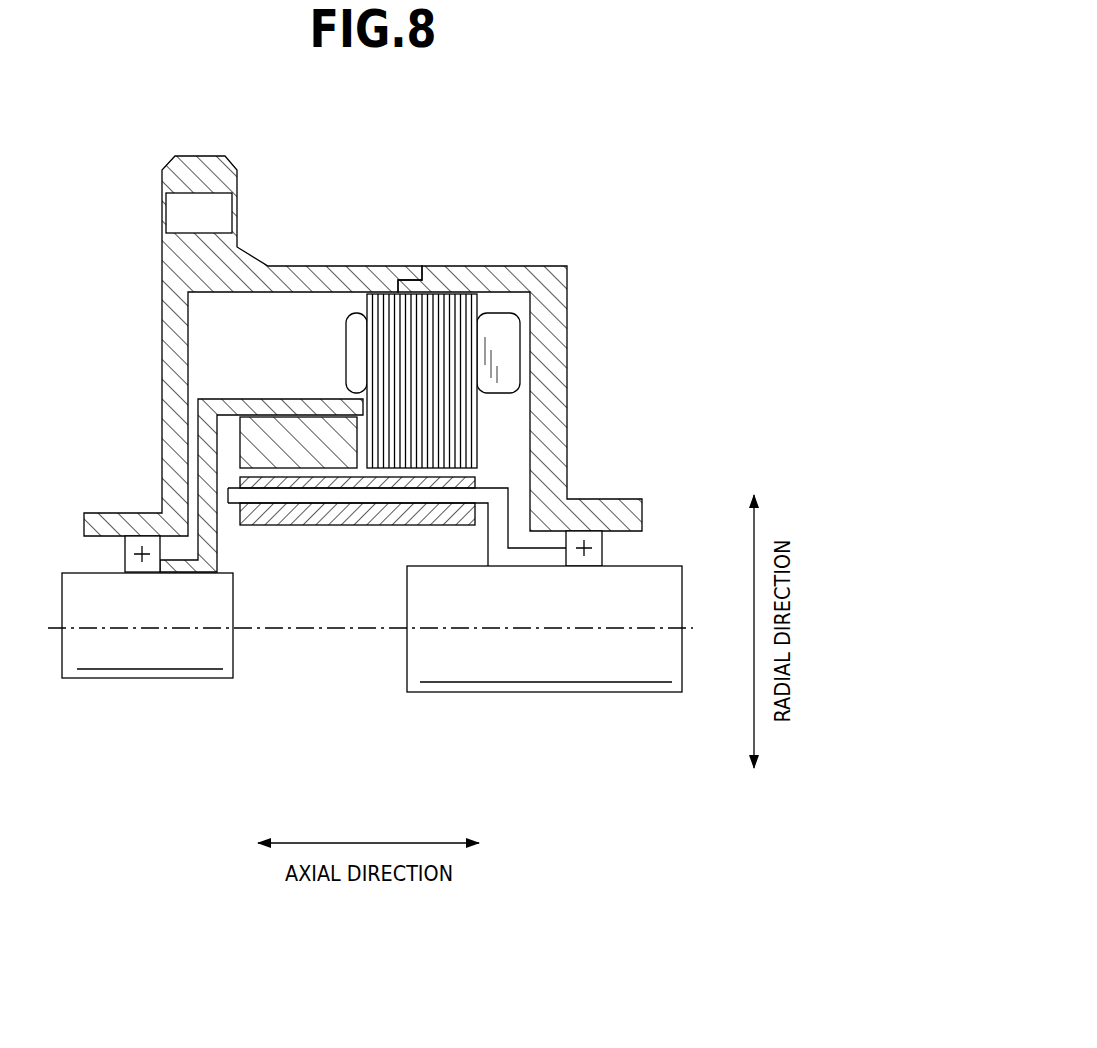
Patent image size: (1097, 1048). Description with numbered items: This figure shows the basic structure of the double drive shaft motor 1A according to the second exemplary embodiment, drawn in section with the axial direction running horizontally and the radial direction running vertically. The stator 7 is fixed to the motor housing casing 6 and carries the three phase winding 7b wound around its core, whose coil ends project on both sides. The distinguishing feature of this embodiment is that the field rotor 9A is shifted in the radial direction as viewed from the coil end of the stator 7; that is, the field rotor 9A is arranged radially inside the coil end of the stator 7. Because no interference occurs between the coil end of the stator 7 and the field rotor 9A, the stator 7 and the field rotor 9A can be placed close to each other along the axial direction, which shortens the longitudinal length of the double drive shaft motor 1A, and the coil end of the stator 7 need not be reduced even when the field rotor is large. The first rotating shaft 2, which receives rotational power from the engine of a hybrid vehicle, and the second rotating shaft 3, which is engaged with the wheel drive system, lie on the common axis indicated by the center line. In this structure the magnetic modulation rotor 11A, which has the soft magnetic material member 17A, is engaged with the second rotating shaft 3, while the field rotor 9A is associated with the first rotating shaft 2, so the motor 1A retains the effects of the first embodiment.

The double drive shaft motor 1A is at (533, 165).
The motor housing casing 6 is at (168, 266).
The stator 7 is at (483, 308).
The three phase winding 7b is at (500, 355).
The field rotor 9A is at (290, 428).
The soft magnetic material member 17A is at (276, 483).
The magnetic modulation rotor 11A is at (337, 528).
The first rotating shaft 2 is at (96, 665).
The second rotating shaft 3 is at (639, 681).